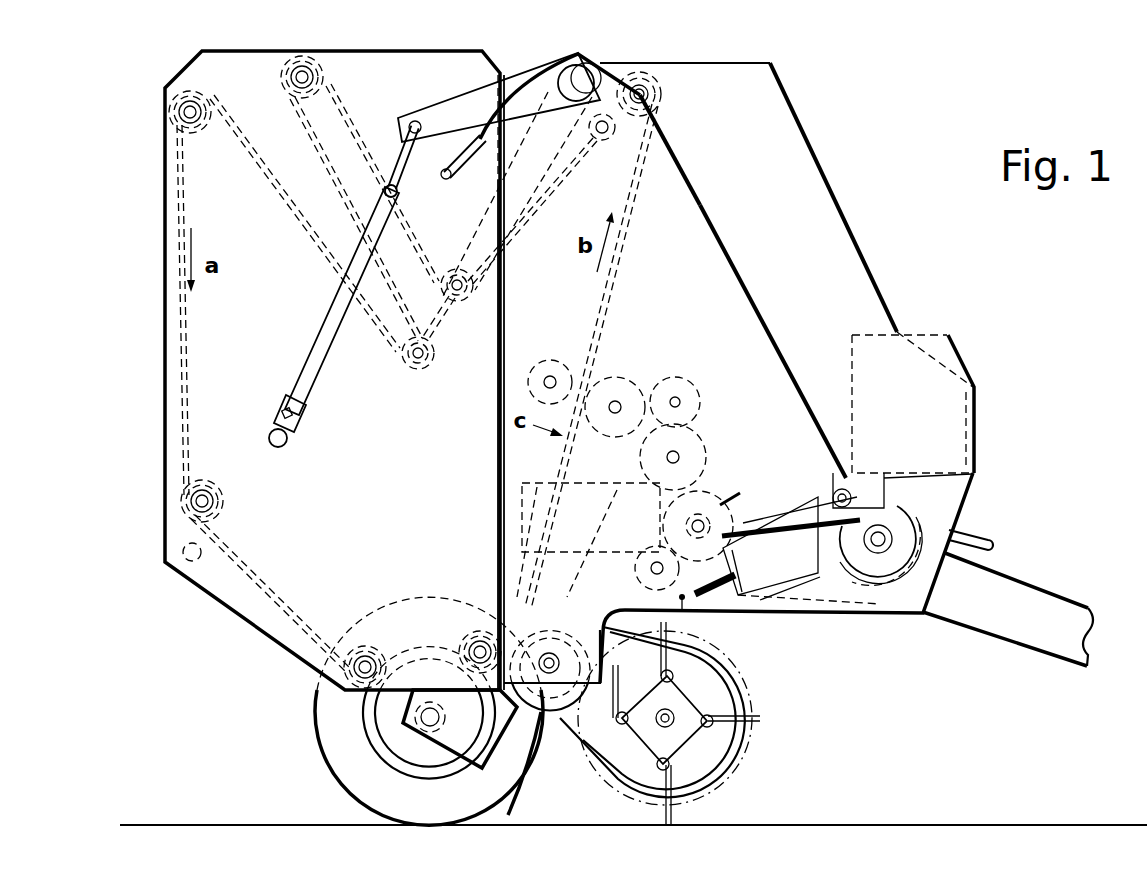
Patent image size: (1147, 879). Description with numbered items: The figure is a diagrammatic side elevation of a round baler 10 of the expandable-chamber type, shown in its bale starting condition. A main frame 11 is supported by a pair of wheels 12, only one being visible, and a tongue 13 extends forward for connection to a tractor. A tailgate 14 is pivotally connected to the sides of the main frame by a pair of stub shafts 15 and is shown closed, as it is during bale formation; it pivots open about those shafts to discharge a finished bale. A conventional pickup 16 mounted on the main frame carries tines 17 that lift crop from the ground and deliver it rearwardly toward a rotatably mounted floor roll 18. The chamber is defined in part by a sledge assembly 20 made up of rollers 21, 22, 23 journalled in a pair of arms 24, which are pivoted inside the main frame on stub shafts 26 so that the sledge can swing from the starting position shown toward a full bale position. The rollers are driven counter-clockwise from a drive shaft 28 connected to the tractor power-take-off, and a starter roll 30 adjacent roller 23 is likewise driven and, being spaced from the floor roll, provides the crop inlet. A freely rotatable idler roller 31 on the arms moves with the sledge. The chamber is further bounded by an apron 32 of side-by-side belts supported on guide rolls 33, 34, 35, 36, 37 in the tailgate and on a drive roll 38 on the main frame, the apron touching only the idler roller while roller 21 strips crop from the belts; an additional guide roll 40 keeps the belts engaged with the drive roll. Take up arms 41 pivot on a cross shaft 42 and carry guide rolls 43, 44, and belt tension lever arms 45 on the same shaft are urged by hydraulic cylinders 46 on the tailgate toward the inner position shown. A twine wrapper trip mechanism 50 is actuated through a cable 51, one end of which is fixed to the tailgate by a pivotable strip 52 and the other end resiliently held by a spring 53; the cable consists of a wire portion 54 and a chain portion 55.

The round baler 10 is at (880, 104).
The main frame 11 is at (568, 528).
The wheels 12 is at (320, 742).
The tongue 13 is at (1000, 612).
The tailgate 14 is at (238, 45).
The stub shafts 15 is at (527, 75).
The pickup 16 is at (790, 763).
The tines 17 is at (762, 718).
The floor roll 18 is at (551, 712).
The sledge assembly 20 is at (675, 380).
The roller 21 is at (628, 380).
The roller 22 is at (706, 452).
The roller 23 is at (682, 523).
The arms 24 is at (690, 415).
The stub shafts 26 is at (728, 505).
The drive shaft 28 is at (975, 535).
The starter roll 30 is at (648, 592).
The idler roller 31 is at (545, 360).
The apron 32 is at (168, 386).
The guide roll 33 is at (302, 95).
The guide roll 34 is at (196, 128).
The guide roll 35 is at (216, 500).
The guide roll 36 is at (368, 650).
The guide roll 37 is at (472, 645).
The drive roll 38 is at (660, 106).
The guide roll 40 is at (598, 132).
The take up arms 41 is at (476, 255).
The cross shaft 42 is at (583, 62).
The guide roll 43 is at (463, 303).
The guide roll 44 is at (420, 370).
The belt tension lever arms 45 is at (440, 110).
The hydraulic cylinders 46 is at (330, 323).
The twine wrapper trip mechanism 50 is at (888, 443).
The cable 51 is at (764, 285).
The pivotable strip 52 is at (457, 160).
The spring 53 is at (742, 516).
The wire portion 54 is at (706, 215).
The chain portion 55 is at (673, 160).